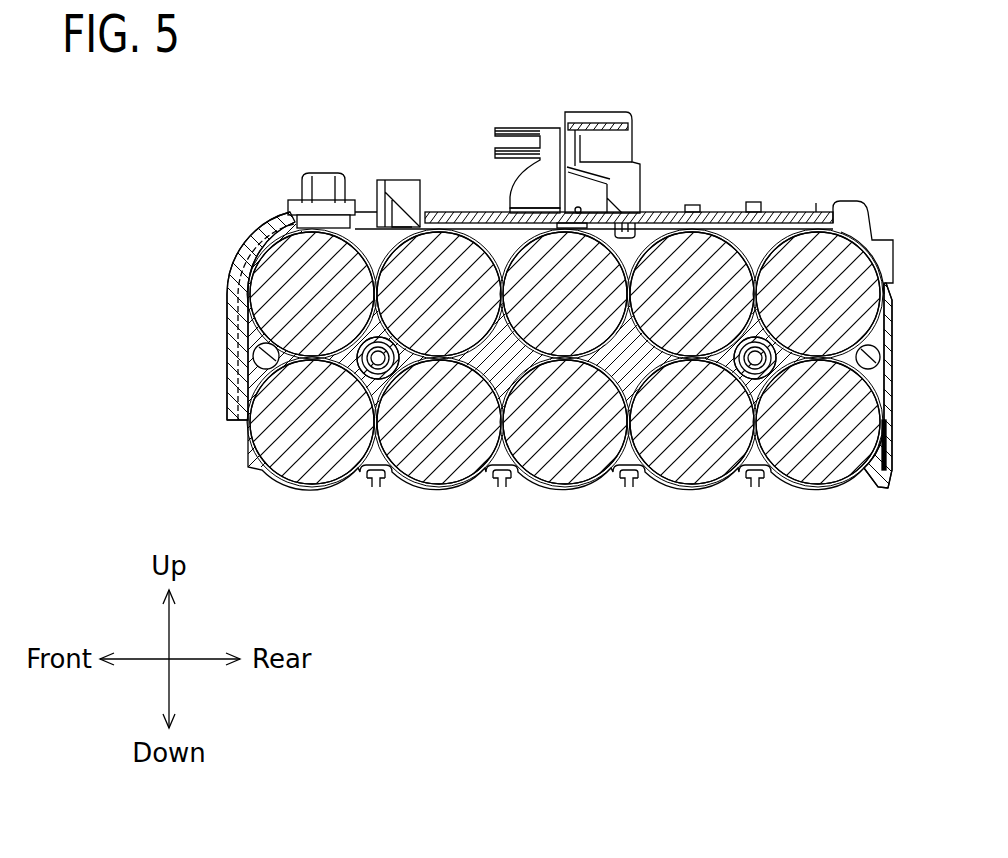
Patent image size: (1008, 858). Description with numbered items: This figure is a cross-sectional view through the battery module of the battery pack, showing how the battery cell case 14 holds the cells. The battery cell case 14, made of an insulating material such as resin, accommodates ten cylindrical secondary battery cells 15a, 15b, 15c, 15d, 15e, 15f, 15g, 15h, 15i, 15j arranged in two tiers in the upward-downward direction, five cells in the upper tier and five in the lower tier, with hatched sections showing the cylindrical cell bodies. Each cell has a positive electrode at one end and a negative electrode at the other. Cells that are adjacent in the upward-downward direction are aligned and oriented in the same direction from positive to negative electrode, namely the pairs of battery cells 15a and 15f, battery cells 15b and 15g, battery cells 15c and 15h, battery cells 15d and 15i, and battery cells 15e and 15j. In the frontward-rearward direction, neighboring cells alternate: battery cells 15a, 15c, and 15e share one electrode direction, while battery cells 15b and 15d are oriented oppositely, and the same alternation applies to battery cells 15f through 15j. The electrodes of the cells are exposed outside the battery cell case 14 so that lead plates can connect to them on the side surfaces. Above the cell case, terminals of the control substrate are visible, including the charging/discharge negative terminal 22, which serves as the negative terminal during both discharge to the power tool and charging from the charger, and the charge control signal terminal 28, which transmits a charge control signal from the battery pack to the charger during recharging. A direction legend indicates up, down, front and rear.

The battery cell case 14 is at (250, 341).
The battery cell 15a is at (268, 262).
The battery cell 15b is at (442, 266).
The battery cell 15c is at (558, 255).
The battery cell 15d is at (708, 255).
The battery cell 15e is at (800, 247).
The battery cell 15f is at (318, 465).
The battery cell 15g is at (443, 465).
The battery cell 15h is at (572, 465).
The battery cell 15i is at (698, 465).
The battery cell 15j is at (827, 460).
The charging/discharge negative terminal 22 is at (510, 124).
The charge control signal terminal 28 is at (604, 114).